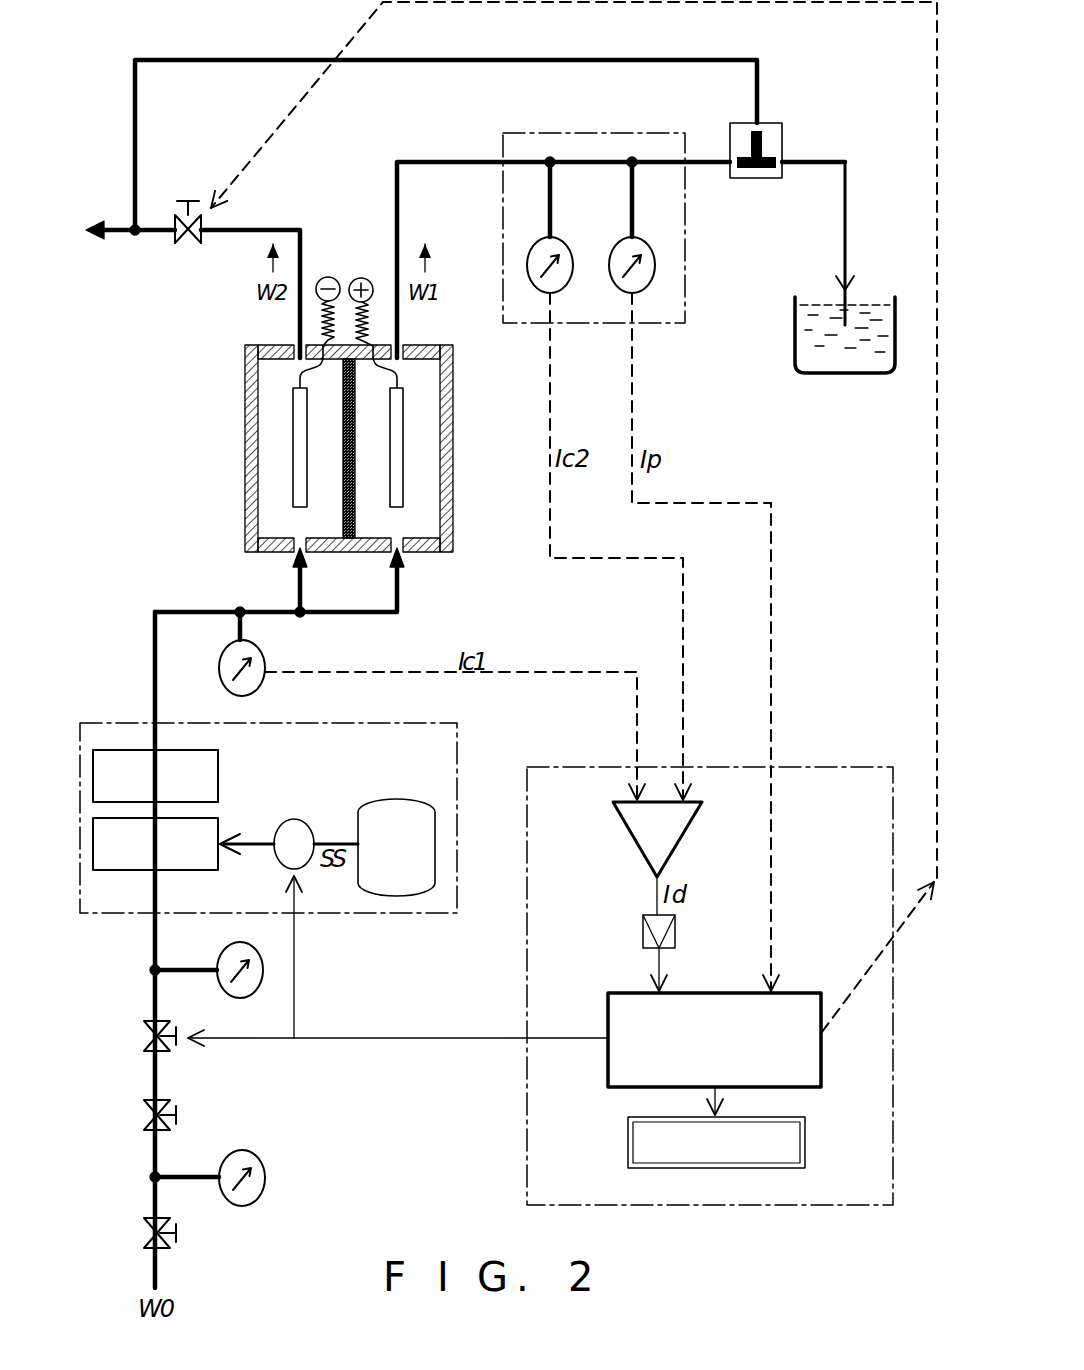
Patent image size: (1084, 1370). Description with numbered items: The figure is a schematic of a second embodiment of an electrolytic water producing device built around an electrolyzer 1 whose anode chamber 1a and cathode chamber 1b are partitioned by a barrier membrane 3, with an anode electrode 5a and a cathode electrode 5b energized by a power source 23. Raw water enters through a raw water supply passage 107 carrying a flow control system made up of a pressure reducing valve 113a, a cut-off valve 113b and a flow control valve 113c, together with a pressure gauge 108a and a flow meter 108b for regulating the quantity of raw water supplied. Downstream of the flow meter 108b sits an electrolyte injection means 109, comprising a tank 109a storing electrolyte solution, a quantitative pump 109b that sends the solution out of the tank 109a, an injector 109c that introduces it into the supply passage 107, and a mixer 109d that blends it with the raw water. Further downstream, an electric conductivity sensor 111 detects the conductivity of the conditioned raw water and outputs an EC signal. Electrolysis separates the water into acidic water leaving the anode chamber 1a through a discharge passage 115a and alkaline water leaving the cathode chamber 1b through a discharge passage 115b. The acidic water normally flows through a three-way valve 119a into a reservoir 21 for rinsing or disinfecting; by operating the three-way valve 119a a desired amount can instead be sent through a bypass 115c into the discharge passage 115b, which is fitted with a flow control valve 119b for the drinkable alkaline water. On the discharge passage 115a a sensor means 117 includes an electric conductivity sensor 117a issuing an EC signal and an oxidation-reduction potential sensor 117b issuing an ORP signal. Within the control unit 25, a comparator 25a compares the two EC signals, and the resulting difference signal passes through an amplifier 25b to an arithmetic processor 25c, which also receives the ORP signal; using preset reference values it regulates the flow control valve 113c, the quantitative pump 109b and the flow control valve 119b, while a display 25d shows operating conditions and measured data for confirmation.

The electrolyzer 1 is at (240, 519).
The anode chamber 1a is at (420, 472).
The cathode chamber 1b is at (272, 458).
The barrier membrane 3 is at (360, 535).
The anode electrode 5a is at (397, 420).
The cathode electrode 5b is at (300, 410).
The reservoir 21 is at (850, 360).
The power source 23 is at (345, 268).
The control unit 25 is at (828, 767).
The comparator 25a is at (640, 824).
The amplifier 25b is at (643, 937).
The arithmetic processor (CPU) 25c is at (620, 1057).
The display 25d is at (640, 1139).
The raw water supply passage 107 is at (155, 1078).
The pressure gauge 108a is at (262, 1193).
The flow meter 108b is at (237, 946).
The electrolyte injection means 109 is at (395, 913).
The tank 109a is at (393, 812).
The quantitative pump 109b is at (293, 830).
The injector 109c is at (130, 862).
The mixer 109d is at (113, 758).
The electric conductivity sensor 111 is at (268, 660).
The pressure reducing valve 113a is at (176, 1238).
The cut-off valve 113b is at (178, 1117).
The flow control valve 113c is at (170, 1050).
The discharge passage 115a is at (448, 168).
The discharge passage 115b is at (160, 238).
The bypass 115c is at (500, 63).
The sensor means 117 is at (590, 130).
The electric conductivity sensor 117a is at (560, 284).
The oxidation-reduction potential sensor 117b is at (642, 284).
The three-way valve 119a is at (775, 136).
The flow control valve 119b is at (186, 200).